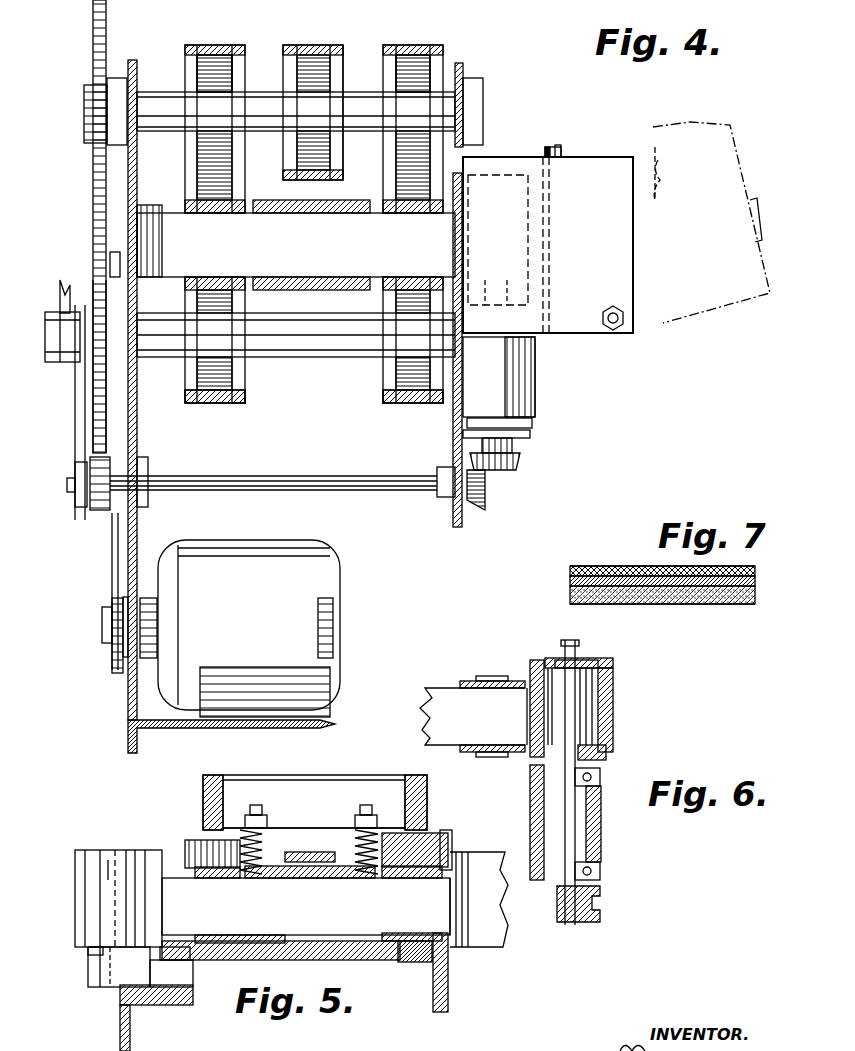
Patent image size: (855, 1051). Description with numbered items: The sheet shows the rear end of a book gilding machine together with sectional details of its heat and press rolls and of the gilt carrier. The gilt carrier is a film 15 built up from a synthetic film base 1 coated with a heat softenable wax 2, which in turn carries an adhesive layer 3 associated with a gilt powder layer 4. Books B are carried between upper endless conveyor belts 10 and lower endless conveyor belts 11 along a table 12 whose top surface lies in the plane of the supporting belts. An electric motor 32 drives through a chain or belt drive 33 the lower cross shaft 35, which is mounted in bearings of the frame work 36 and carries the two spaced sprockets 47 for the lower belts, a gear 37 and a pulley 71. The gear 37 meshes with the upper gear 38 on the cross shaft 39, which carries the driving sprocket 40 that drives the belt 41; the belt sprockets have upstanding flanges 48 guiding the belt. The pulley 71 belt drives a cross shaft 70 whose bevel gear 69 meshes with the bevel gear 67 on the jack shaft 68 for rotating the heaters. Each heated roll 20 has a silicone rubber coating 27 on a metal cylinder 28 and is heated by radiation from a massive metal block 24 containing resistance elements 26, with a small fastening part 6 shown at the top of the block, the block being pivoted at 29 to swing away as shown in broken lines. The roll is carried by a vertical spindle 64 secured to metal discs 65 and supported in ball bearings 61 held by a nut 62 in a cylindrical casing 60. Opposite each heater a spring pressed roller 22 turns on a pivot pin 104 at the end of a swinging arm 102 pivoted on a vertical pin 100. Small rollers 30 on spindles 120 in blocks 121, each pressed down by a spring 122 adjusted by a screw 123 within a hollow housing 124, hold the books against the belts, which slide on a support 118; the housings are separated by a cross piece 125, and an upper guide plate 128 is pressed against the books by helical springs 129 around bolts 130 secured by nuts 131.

In FIG. 4, the upper gear 38 is at (93, 25).
In FIG. 4, the gear 37 is at (97, 405).
In FIG. 4, the pulley 71 is at (80, 372).
In FIG. 4, the lower cross shaft 35 is at (45, 340).
In FIG. 4, the frame work 36 is at (137, 440).
In FIG. 6, the frame work 36 is at (530, 805).
In FIG. 5, the frame work 36 is at (152, 1047).
In FIG. 4, the cross shaft 39 is at (310, 105).
In FIG. 4, the upstanding flanges 48 is at (190, 60).
In FIG. 4, the upper endless conveyor belts 10 is at (206, 46).
In FIG. 6, the upper endless conveyor belts 10 is at (468, 679).
In FIG. 5, the upper endless conveyor belts 10 is at (211, 878).
In FIG. 4, the belt 41 is at (291, 46).
In FIG. 5, the belt 41 is at (300, 852).
In FIG. 4, the driving pulley or sprocket 40 is at (330, 75).
In FIG. 4, the upper guide plate 128 is at (340, 200).
In FIG. 5, the upper guide plate 128 is at (325, 879).
In FIG. 4, the book B is at (296, 245).
In FIG. 6, the book B is at (472, 716).
In FIG. 5, the book B is at (306, 906).
In FIG. 4, the spring pressed roller 22 is at (166, 196).
In FIG. 5, the spring pressed roller 22 is at (80, 853).
In FIG. 4, the table 12 is at (296, 290).
In FIG. 5, the table 12 is at (311, 950).
In FIG. 4, the sprockets 47 is at (222, 355).
In FIG. 4, the lower endless conveyor belts 11 is at (211, 404).
In FIG. 6, the lower endless conveyor belts 11 is at (481, 757).
In FIG. 5, the lower endless conveyor belts 11 is at (211, 935).
In FIG. 4, the cross shaft 70 is at (376, 490).
In FIG. 4, the chain or belt drive 33 is at (112, 565).
In FIG. 4, the electric motor 32 is at (243, 600).
In FIG. 4, the heated roll 20 is at (512, 212).
In FIG. 6, the heated roll 20 is at (616, 653).
In FIG. 5, the heated roll 20 is at (500, 842).
In FIG. 4, the resistance elements 26 is at (548, 148).
In FIG. 4, the fastener 6 is at (560, 147).
In FIG. 4, the metal block 24 is at (632, 157).
In FIG. 4, the pivot 29 is at (626, 315).
In FIG. 4, the jack shaft 68 is at (515, 445).
In FIG. 4, the bevel gear 67 is at (520, 462).
In FIG. 4, the bevel gear 69 is at (482, 505).
In FIG. 7, the synthetic film base 1 is at (575, 568).
In FIG. 7, the heat softenable wax 2 is at (575, 579).
In FIG. 7, the adhesive layer 3 is at (575, 592).
In FIG. 7, the gilt powder layer 4 is at (755, 581).
In FIG. 6, the powder coated film 15 is at (527, 690).
In FIG. 5, the powder coated film 15 is at (450, 946).
In FIG. 6, the metal discs 65 is at (592, 751).
In FIG. 6, the vertical spindle 64 is at (576, 656).
In FIG. 6, the silicone rubber coating 27 is at (613, 681).
In FIG. 6, the metal cylinder 28 is at (605, 715).
In FIG. 6, the ball bearings 61 is at (600, 777).
In FIG. 6, the cylindrical metal casing 60 is at (601, 825).
In FIG. 6, the nut 62 is at (598, 888).
In FIG. 5, the support 118 is at (412, 963).
In FIG. 5, the spindle 120 is at (396, 880).
In FIG. 5, the pivot pin 104 is at (108, 868).
In FIG. 5, the swinging arm 102 is at (90, 975).
In FIG. 5, the vertical pin 100 is at (175, 976).
In FIG. 5, the hollow housing 124 is at (210, 777).
In FIG. 5, the screw 123 is at (415, 777).
In FIG. 5, the spring 122 is at (427, 806).
In FIG. 5, the block 121 is at (203, 822).
In FIG. 5, the bolts 130 is at (256, 806).
In FIG. 5, the nut 131 is at (264, 812).
In FIG. 5, the cross piece 125 is at (320, 830).
In FIG. 5, the helical springs 129 is at (264, 850).
In FIG. 5, the rollers 30 is at (195, 850).